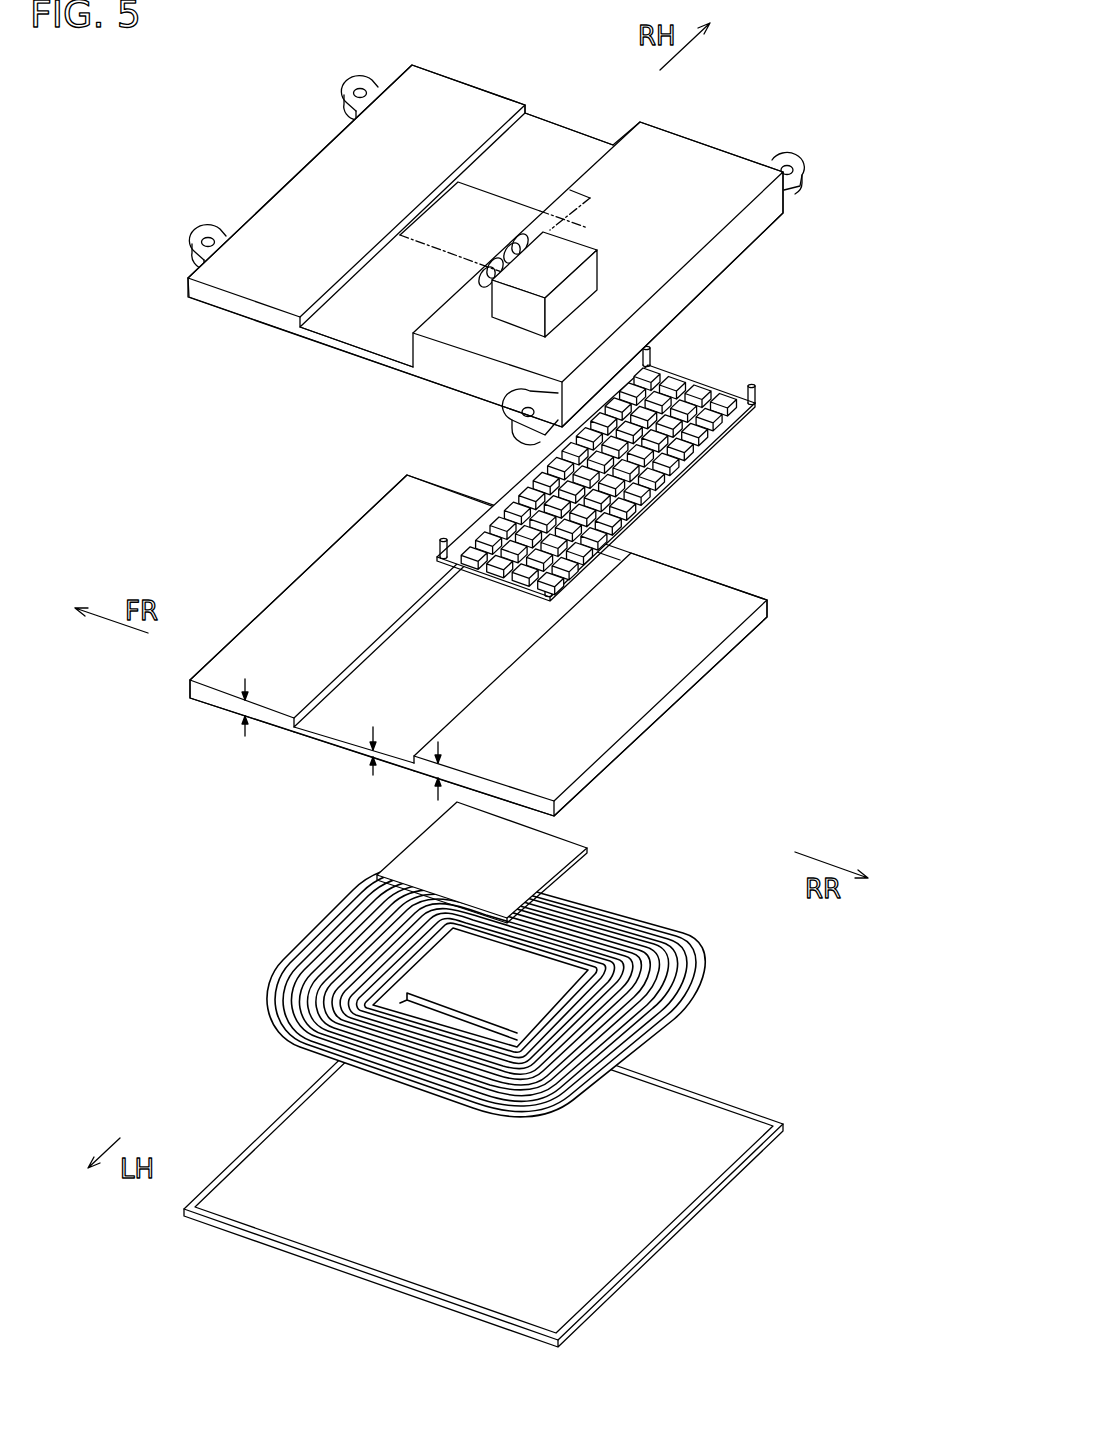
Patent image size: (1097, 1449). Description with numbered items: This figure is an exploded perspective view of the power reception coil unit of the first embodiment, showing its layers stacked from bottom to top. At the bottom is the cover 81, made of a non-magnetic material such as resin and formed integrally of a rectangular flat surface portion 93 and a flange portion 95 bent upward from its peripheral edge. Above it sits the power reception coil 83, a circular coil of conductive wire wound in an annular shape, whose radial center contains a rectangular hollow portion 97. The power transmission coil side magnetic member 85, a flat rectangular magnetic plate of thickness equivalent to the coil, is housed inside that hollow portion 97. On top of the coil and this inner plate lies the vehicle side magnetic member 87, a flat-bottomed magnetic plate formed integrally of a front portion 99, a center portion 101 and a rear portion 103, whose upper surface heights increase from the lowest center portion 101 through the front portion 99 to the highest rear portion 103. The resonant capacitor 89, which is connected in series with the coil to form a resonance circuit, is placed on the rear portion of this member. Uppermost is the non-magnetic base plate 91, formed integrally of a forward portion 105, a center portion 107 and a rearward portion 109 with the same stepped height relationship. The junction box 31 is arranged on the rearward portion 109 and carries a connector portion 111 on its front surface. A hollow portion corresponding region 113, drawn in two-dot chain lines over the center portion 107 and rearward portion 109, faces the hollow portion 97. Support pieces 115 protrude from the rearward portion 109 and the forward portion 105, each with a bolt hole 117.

The junction box 31 is at (578, 236).
The cover 81 is at (672, 1241).
The power reception coil 83 is at (496, 984).
The power transmission coil side magnetic member 85 is at (400, 862).
The vehicle side magnetic member 87 is at (500, 645).
The resonant capacitor 89 is at (716, 380).
The base plate 91 is at (505, 248).
The flat surface portion 93 is at (323, 1234).
The flange portion 95 is at (430, 1277).
The hollow portion 97 is at (428, 978).
The front portion 99 is at (300, 594).
The center portion 101 is at (335, 723).
The rear portion 103 is at (628, 694).
The forward portion 105 is at (292, 195).
The center portion 107 is at (363, 338).
The rearward portion 109 is at (503, 355).
The connector portion 111 is at (487, 280).
The hollow portion corresponding region 113 is at (492, 198).
The support pieces 115 is at (352, 90).
The bolt holes 117 is at (207, 238).